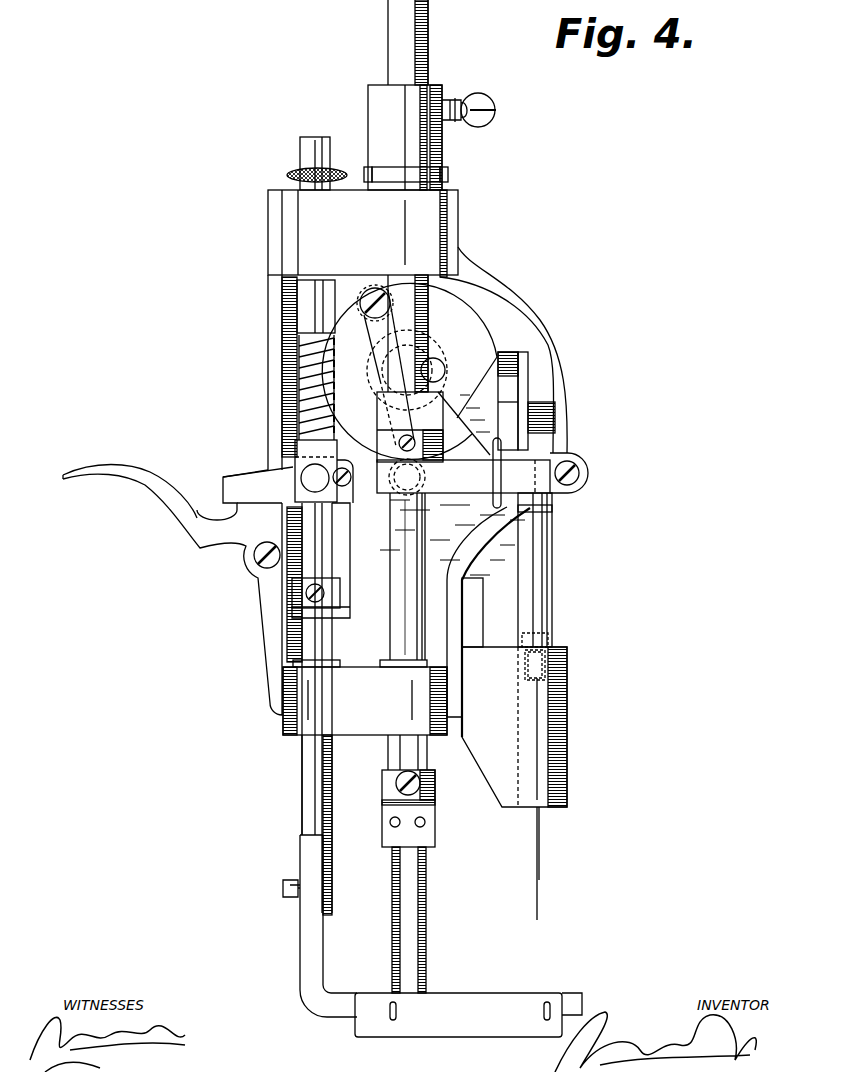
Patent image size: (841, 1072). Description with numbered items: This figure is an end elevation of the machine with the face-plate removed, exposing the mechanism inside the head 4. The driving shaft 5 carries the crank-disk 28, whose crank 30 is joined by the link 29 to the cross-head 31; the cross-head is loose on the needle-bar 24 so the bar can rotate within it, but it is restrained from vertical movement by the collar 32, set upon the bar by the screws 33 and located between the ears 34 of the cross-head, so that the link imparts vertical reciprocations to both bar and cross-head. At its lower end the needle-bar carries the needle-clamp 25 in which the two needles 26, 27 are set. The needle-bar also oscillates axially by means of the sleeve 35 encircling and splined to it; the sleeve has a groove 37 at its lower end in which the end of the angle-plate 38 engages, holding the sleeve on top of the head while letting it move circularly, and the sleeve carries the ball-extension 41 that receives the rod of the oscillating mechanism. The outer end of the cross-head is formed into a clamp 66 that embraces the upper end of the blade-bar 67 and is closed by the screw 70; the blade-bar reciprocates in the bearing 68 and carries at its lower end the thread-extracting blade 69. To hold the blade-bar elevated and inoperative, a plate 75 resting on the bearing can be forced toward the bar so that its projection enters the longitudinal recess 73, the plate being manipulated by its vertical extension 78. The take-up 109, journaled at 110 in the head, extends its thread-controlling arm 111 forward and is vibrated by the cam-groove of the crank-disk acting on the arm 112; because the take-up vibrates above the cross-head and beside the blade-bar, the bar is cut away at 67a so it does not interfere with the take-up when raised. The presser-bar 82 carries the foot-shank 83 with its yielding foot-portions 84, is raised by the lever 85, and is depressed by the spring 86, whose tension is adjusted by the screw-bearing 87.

The head 4 is at (268, 366).
The driving shaft 5 is at (445, 370).
The needle-bar 24 is at (388, 20).
The needle-clamp 25 is at (432, 825).
The needle 26 is at (426, 920).
The needle 27 is at (392, 925).
The crank-disk 28 is at (409, 371).
The link 29 is at (374, 350).
The crank 30 is at (375, 288).
The cross-head 31 is at (463, 517).
The collar 32 is at (443, 448).
The screws 33 is at (398, 441).
The ears 34 is at (384, 404).
The sleeve 35 is at (368, 100).
The groove 37 is at (390, 167).
The angle-plate 38 is at (448, 172).
The ball-extension 41 is at (496, 104).
The clamp 66 is at (583, 463).
The blade-bar 67 is at (548, 582).
The cut-away portion 67a is at (535, 509).
The bearing 68 is at (533, 702).
The thread-extracting blade 69 is at (540, 862).
The screw 70 is at (578, 482).
The longitudinal recess 73 is at (526, 672).
The plate 75 is at (525, 655).
The vertical extension 78 is at (525, 637).
The presser-bar 82 is at (302, 780).
The foot-shank 83 is at (300, 858).
The foot-portions 84 is at (415, 1037).
The lever 85 is at (190, 530).
The spring 86 is at (305, 405).
The screw-bearing 87 is at (290, 174).
The take-up 109 is at (525, 380).
The journal 110 is at (545, 411).
The thread-controlling arm 111 is at (496, 505).
The arm 112 is at (505, 356).